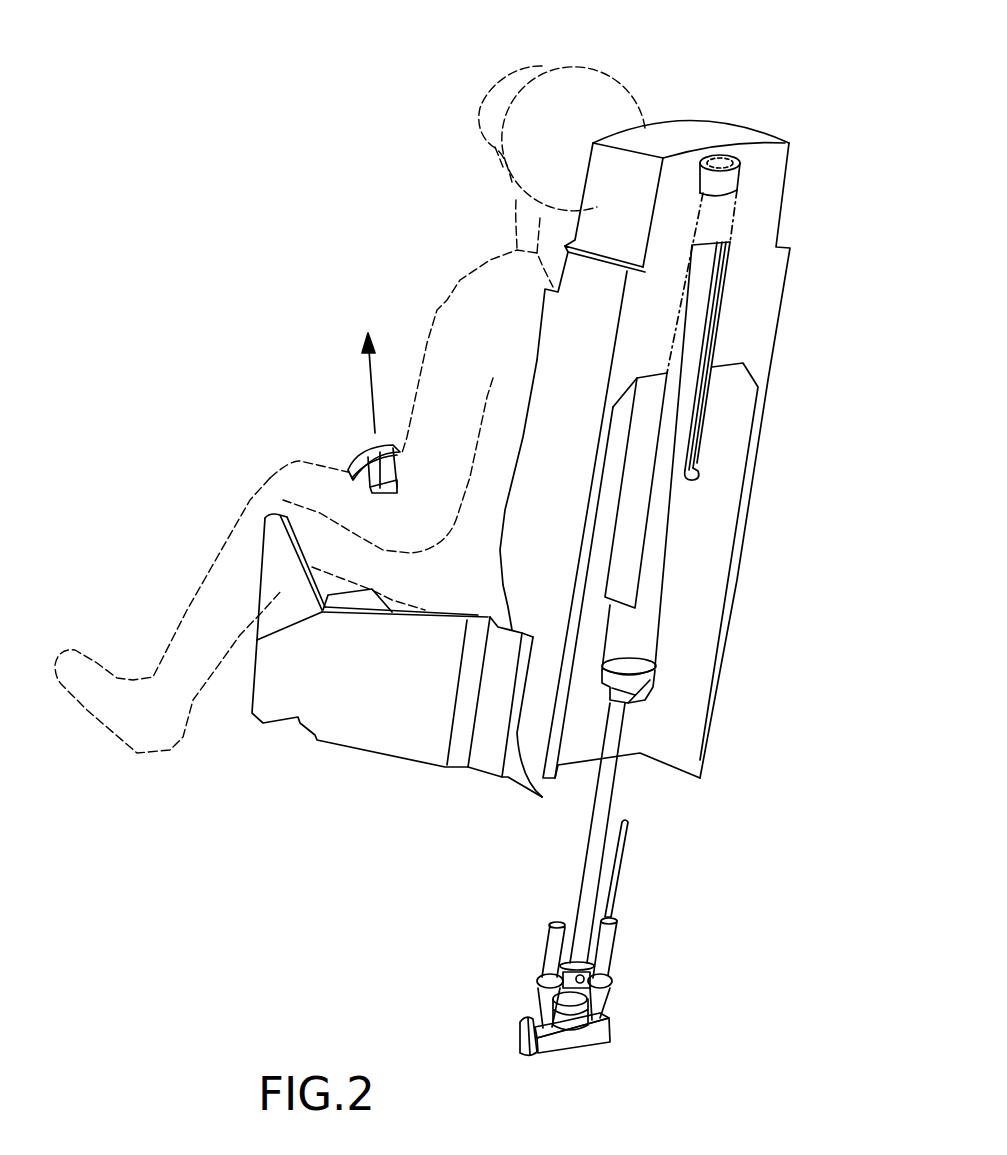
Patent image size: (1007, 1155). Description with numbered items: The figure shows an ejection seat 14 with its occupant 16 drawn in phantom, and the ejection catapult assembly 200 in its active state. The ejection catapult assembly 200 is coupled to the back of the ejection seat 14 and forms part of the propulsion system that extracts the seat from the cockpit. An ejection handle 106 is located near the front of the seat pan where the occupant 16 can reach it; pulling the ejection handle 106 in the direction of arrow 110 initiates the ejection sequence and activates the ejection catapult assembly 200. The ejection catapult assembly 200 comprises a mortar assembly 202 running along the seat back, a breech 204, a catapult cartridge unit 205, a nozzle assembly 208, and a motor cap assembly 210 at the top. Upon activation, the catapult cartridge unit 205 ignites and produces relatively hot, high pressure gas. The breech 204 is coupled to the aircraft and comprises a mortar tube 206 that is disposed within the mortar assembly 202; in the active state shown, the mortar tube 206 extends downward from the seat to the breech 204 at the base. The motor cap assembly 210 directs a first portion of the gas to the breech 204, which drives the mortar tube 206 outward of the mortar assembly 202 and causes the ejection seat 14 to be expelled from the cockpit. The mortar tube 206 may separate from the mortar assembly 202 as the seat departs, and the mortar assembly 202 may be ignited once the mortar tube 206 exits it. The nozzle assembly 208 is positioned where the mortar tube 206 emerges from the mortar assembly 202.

The ejection seat 14 is at (745, 110).
The occupant 16 is at (650, 77).
The ejection handle 106 is at (338, 455).
The arrow 110 is at (366, 367).
The ejection catapult assembly 200 is at (636, 570).
The mortar assembly 202 is at (697, 310).
The breech 204 is at (613, 982).
The catapult cartridge unit 205 is at (540, 977).
The mortar tube 206 is at (597, 872).
The nozzle assembly 208 is at (655, 668).
The motor cap assembly 210 is at (735, 163).